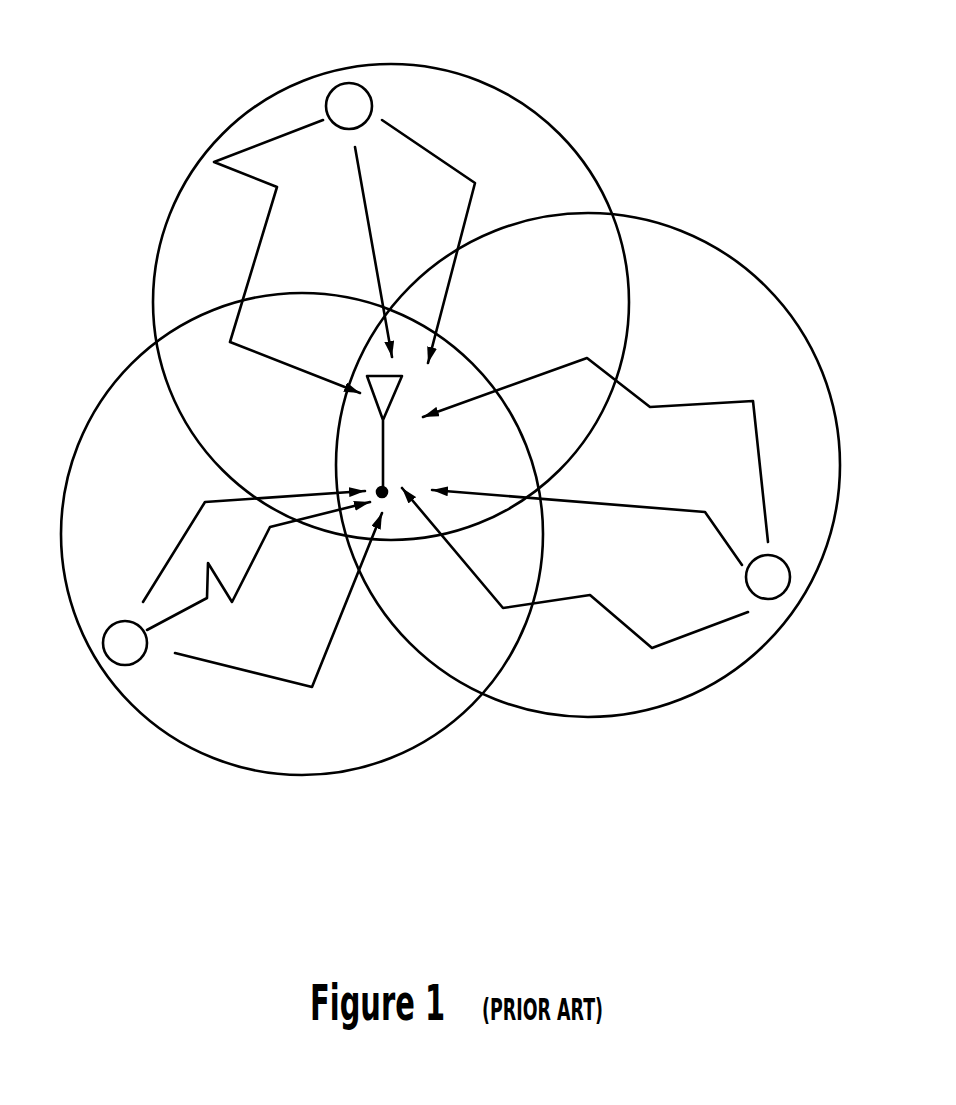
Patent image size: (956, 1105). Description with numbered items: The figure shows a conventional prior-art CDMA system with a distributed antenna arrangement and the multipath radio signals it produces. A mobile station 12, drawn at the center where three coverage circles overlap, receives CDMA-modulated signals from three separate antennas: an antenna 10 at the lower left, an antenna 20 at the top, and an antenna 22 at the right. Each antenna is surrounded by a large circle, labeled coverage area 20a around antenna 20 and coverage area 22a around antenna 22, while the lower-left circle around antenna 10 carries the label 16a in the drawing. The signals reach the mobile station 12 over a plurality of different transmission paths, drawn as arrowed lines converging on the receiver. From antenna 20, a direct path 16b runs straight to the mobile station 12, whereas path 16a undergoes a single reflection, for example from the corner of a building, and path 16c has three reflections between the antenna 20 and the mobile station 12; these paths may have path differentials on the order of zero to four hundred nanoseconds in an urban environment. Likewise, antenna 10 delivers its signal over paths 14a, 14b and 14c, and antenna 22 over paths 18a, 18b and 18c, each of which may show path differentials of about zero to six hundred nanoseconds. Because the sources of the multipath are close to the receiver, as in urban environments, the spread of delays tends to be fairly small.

The antenna 10 is at (113, 653).
The mobile station 12 is at (390, 482).
The transmission path 14a is at (175, 550).
The transmission path 14b is at (232, 602).
The transmission path 14c is at (253, 677).
The reflected path 16a is at (422, 147).
The direct path 16b is at (367, 210).
The multiply reflected path 16c is at (268, 217).
The transmission path 18a is at (692, 402).
The transmission path 18b is at (650, 508).
The transmission path 18c is at (617, 617).
The antenna 20 is at (343, 98).
The coverage area of base station 20 20a is at (505, 93).
The antenna 22 is at (780, 590).
The coverage area of base station 22 22a is at (737, 678).